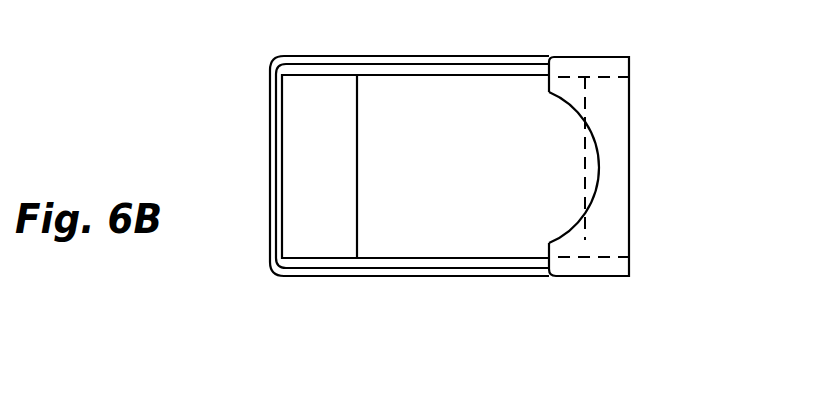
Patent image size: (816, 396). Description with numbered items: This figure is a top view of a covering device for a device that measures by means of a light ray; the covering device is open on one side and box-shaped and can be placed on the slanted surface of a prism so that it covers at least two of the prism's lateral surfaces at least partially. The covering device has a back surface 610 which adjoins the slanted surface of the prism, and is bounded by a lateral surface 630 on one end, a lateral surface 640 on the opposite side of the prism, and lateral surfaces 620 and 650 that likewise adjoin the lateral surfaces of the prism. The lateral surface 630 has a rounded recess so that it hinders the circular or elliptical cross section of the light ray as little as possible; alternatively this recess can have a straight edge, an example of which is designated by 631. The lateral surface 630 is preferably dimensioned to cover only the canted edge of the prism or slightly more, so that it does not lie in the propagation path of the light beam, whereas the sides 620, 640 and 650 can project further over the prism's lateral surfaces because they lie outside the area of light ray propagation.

The back surface 610 is at (453, 149).
The lateral surface 620 is at (315, 277).
The lateral surface 630 is at (608, 114).
The straight edge 631 is at (597, 170).
The lateral surface 640 is at (302, 190).
The lateral surface 650 is at (368, 56).